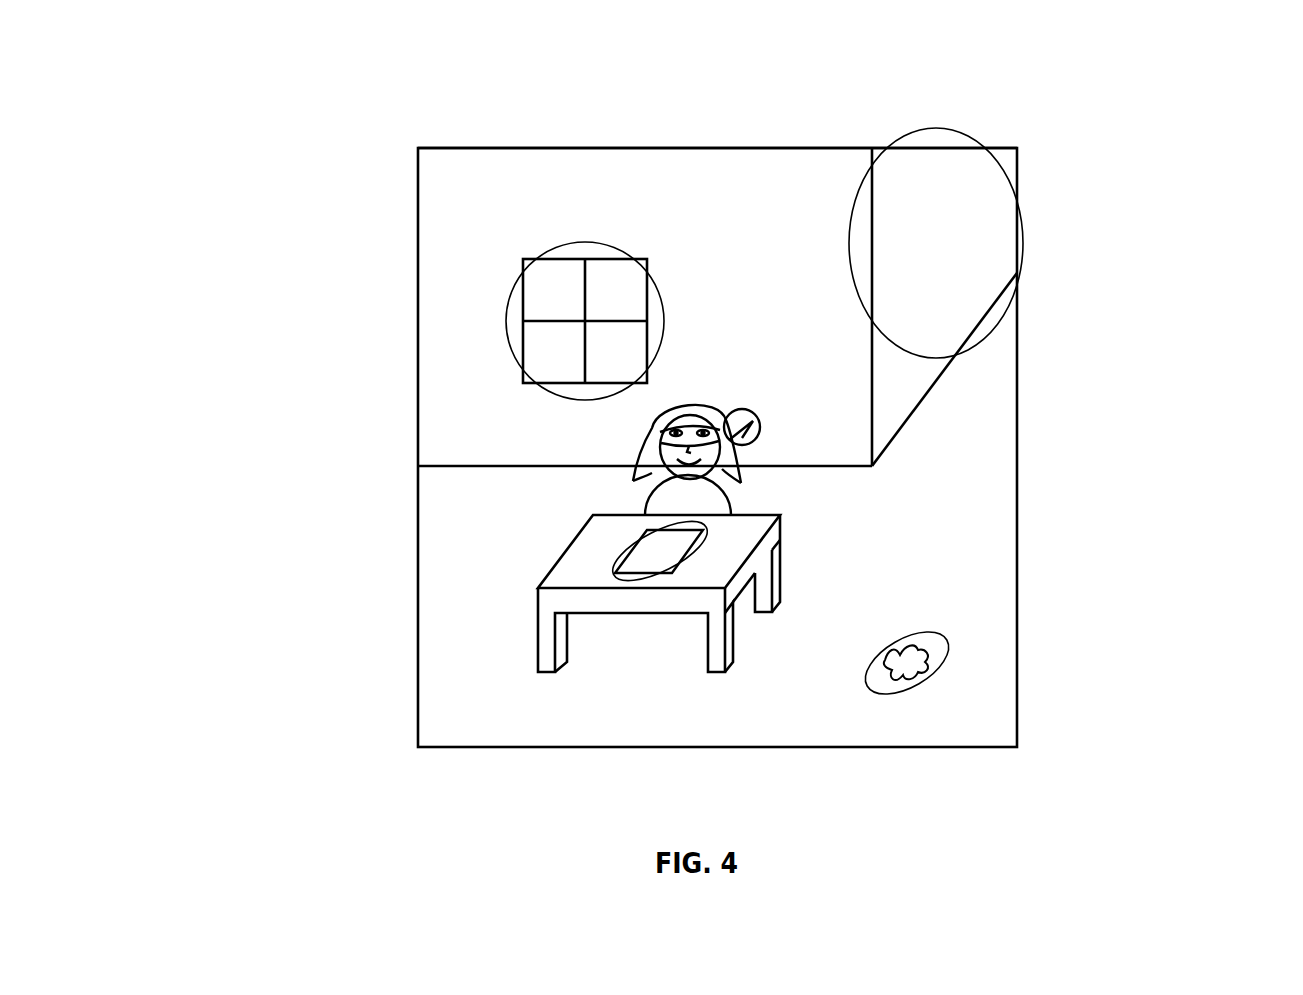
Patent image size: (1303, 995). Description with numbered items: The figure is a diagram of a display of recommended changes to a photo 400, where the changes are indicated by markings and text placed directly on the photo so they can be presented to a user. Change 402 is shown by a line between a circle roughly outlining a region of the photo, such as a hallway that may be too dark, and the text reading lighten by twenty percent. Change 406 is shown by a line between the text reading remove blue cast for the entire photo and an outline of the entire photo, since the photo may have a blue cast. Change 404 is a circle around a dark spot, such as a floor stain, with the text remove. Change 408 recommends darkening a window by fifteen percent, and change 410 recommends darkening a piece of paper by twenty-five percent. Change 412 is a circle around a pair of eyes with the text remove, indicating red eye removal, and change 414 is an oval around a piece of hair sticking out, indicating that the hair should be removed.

The photo 400 is at (1214, 51).
The change 402 is at (945, 128).
The change 404 is at (949, 652).
The change 406 is at (513, 148).
The change 408 is at (512, 347).
The change 410 is at (627, 543).
The change 412 is at (735, 368).
The change 414 is at (732, 444).